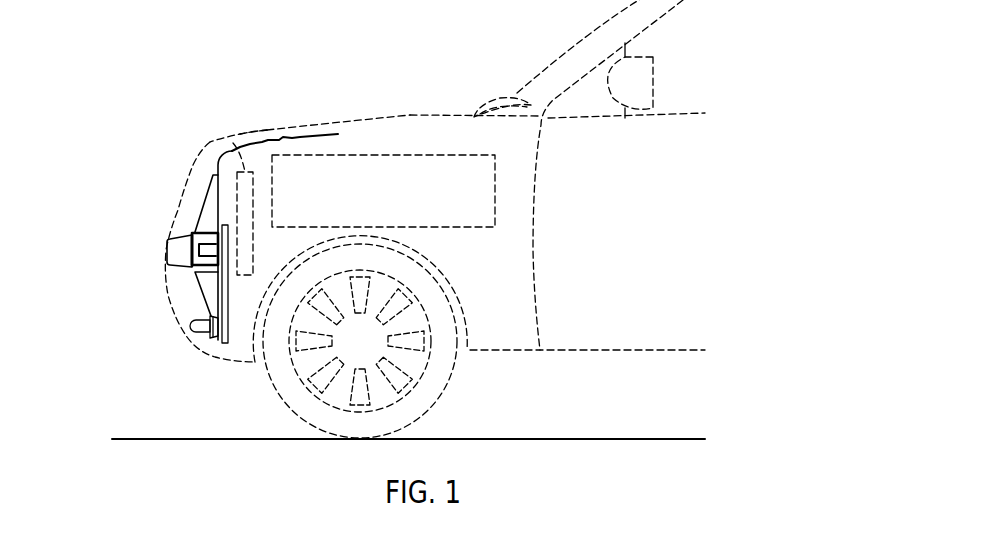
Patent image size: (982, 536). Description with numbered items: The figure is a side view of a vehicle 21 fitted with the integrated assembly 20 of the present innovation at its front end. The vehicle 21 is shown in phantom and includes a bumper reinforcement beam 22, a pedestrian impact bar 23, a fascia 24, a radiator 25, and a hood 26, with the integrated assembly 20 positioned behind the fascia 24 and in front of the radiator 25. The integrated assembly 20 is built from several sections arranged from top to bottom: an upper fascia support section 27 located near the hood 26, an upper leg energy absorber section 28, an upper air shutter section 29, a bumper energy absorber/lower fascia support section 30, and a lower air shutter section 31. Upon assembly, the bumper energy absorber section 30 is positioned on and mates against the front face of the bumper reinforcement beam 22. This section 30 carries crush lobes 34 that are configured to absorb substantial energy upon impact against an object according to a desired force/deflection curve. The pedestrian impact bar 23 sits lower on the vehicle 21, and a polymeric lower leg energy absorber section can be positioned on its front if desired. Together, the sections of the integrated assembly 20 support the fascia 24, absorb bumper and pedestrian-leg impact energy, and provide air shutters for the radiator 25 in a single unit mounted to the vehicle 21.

The integrated assembly 20 is at (130, 318).
The vehicle 21 is at (572, 243).
The bumper reinforcement beam 22 is at (202, 234).
The pedestrian impact bar 23 is at (206, 340).
The fascia 24 is at (167, 238).
The radiator 25 is at (233, 141).
The hood 26 is at (412, 117).
The upper fascia support section 27 is at (305, 137).
The upper leg energy absorber section 28 is at (250, 133).
The upper air shutter section 29 is at (213, 173).
The bumper energy absorber/lower fascia support section 30 is at (192, 235).
The lower air shutter section 31 is at (200, 297).
The crush lobes 34 is at (181, 258).